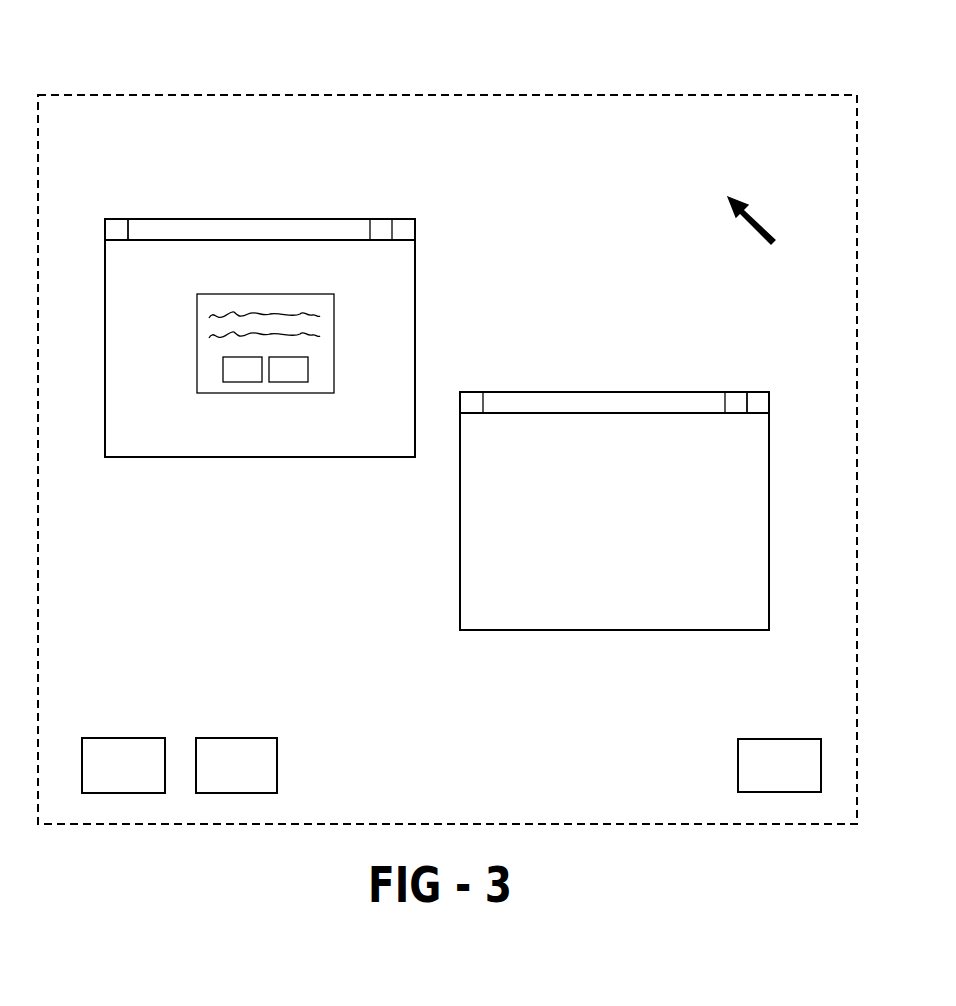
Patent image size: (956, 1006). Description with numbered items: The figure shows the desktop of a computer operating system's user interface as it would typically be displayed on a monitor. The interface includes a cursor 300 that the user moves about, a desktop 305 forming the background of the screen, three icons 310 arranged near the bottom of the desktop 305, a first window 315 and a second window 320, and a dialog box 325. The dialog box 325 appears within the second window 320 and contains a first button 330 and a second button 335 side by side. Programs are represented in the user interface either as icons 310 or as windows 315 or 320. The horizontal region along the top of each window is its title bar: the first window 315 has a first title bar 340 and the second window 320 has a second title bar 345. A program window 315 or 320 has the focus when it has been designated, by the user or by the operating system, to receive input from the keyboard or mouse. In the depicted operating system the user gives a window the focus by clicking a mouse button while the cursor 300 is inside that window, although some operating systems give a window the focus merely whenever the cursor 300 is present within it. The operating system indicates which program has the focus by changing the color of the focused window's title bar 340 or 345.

The cursor 300 is at (760, 222).
The desktop 305 is at (294, 95).
The icons 310 is at (248, 738).
The first window 315 is at (769, 518).
The second window 320 is at (105, 400).
The dialog box 325 is at (197, 331).
The first button 330 is at (242, 375).
The second button 335 is at (288, 375).
The first title bar 340 is at (113, 229).
The second title bar 345 is at (758, 400).